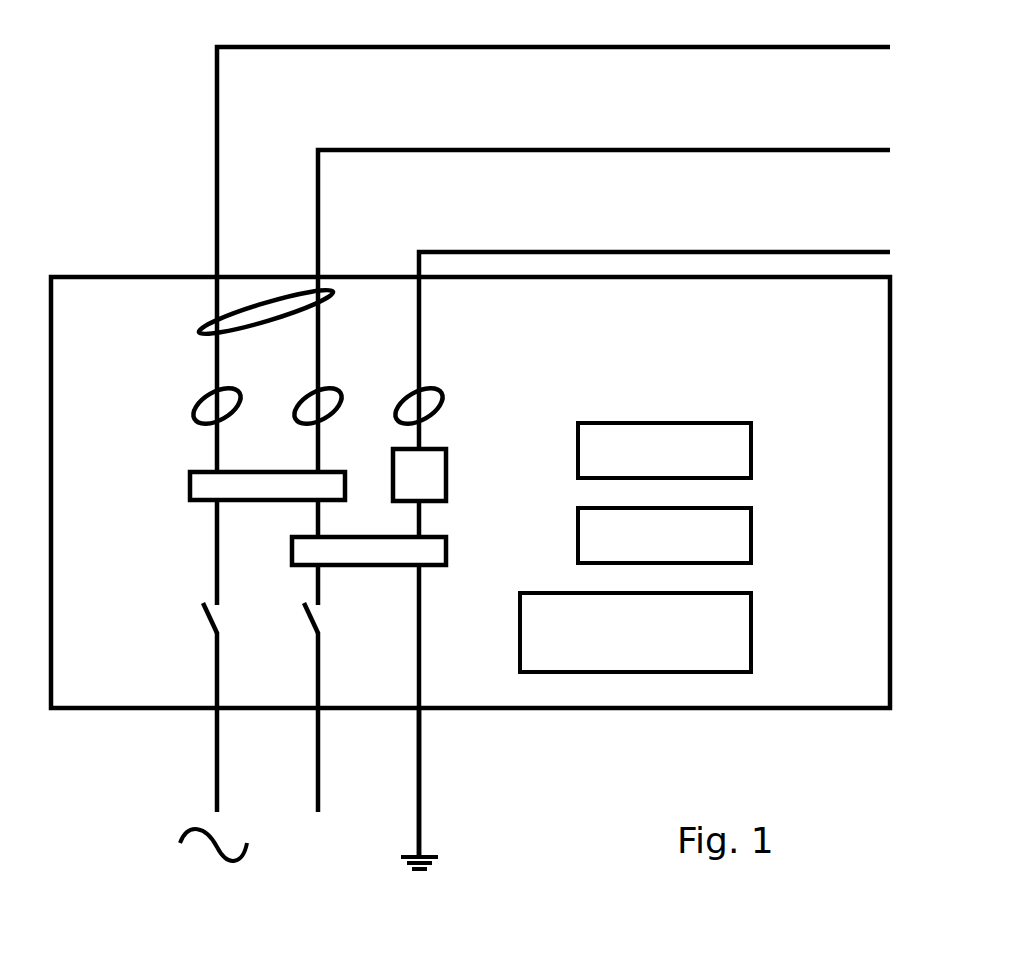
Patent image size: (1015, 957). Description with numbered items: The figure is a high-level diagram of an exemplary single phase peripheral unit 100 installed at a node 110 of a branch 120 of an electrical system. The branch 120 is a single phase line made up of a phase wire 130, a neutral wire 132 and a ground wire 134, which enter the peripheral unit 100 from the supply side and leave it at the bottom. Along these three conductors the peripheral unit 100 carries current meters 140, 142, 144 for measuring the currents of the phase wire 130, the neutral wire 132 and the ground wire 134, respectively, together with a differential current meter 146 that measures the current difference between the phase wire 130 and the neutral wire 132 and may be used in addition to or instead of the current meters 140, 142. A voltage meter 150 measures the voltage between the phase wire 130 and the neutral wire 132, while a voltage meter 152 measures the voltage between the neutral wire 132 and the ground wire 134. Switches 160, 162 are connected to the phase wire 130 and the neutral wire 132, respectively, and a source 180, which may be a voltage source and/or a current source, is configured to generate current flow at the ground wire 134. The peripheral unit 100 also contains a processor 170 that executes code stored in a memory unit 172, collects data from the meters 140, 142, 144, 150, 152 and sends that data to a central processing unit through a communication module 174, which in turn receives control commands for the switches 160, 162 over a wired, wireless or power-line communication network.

The single phase peripheral unit 100 is at (892, 338).
The node 110 is at (130, 150).
The branch 120 is at (912, 35).
The phase wire 130 is at (213, 758).
The neutral wire 132 is at (320, 772).
The ground wire 134 is at (422, 783).
The current meter 140 is at (195, 403).
The current meter 142 is at (307, 395).
The current meter 144 is at (443, 400).
The differential current meter 146 is at (200, 325).
The voltage meter 150 is at (183, 480).
The voltage meter 152 is at (446, 547).
The switch 160 is at (205, 623).
The switch 162 is at (308, 623).
The processor 170 is at (752, 535).
The memory unit 172 is at (667, 423).
The communication module 174 is at (752, 628).
The source 180 is at (446, 472).